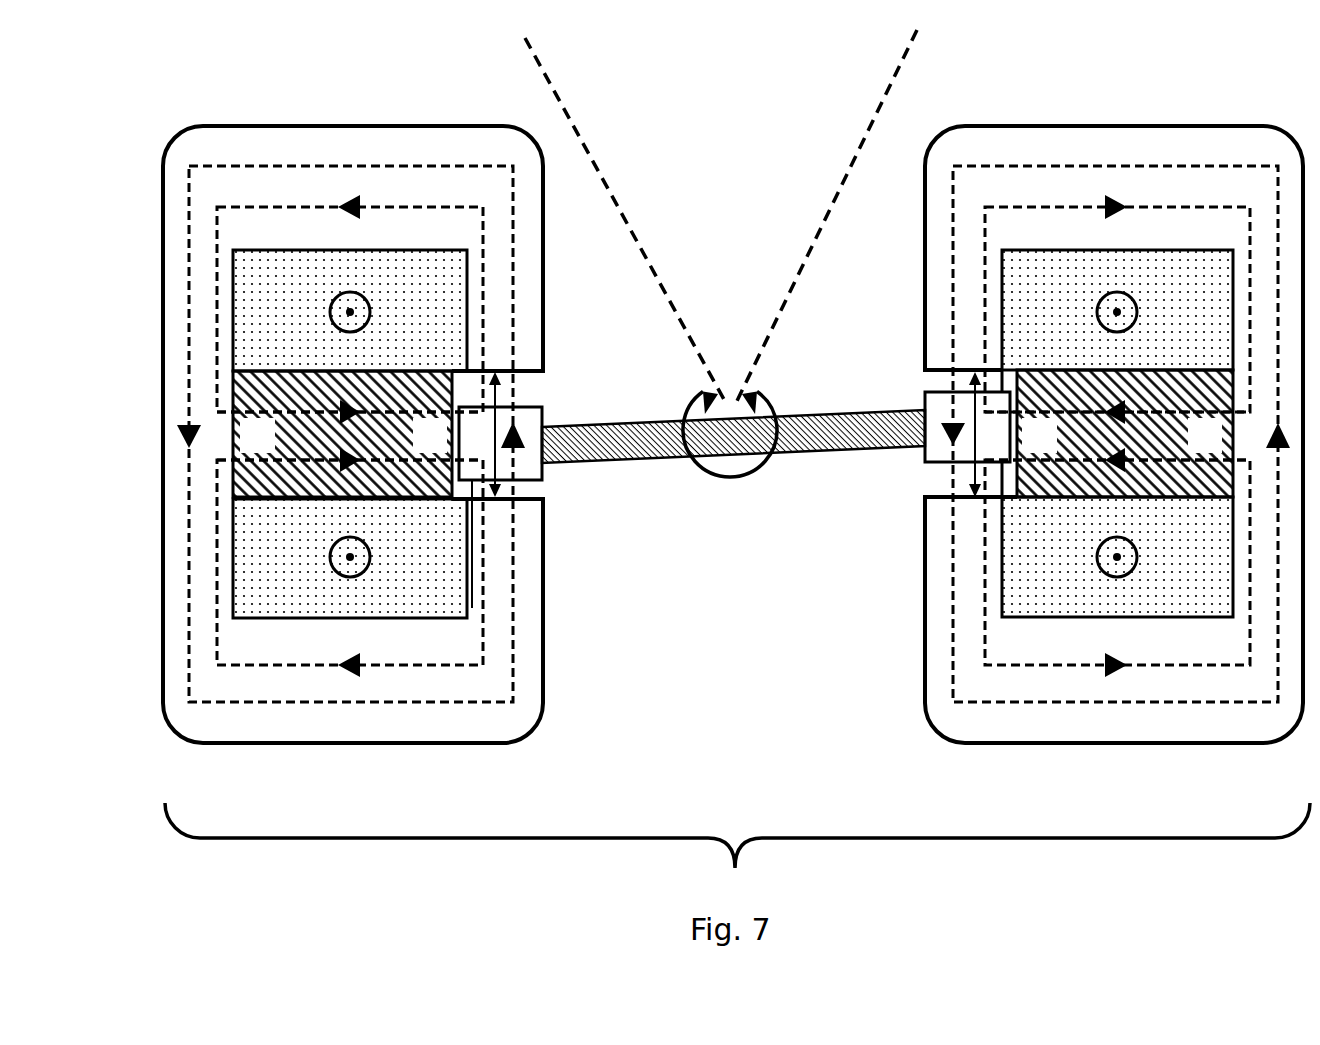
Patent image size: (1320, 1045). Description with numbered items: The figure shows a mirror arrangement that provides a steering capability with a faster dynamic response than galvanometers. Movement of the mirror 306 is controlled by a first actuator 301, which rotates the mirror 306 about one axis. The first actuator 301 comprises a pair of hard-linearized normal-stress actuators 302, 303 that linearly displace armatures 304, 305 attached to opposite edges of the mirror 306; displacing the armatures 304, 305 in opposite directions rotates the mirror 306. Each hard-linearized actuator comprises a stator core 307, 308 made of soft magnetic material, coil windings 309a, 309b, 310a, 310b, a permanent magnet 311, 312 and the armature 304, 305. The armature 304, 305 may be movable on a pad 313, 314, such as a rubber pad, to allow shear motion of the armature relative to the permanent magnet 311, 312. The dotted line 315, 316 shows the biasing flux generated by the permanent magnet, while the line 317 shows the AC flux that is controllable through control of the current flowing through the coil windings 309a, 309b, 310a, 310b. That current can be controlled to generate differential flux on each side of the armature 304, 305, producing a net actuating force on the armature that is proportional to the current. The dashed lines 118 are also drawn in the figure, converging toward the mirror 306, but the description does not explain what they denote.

The first actuator 301 is at (737, 853).
The hard-linearized normal-stress actuator 302 is at (585, 430).
The hard-linearized normal-stress actuator 303 is at (1072, 430).
The armature 304 is at (547, 415).
The armature 305 is at (923, 393).
The mirror 306 is at (832, 453).
The stator core 307 is at (412, 725).
The stator core 308 is at (1093, 720).
The coil winding 309a is at (430, 278).
The coil winding 309b is at (442, 592).
The coil winding 310a is at (1183, 278).
The coil winding 310b is at (1205, 588).
The permanent magnet 311 is at (437, 505).
The permanent magnet 312 is at (1033, 498).
The pad 313 is at (462, 387).
The pad 314 is at (290, 205).
The biasing flux 315 is at (1070, 205).
The biasing flux 316 is at (240, 165).
The AC flux 317 is at (1000, 163).
The optical beam path 118 is at (862, 130).